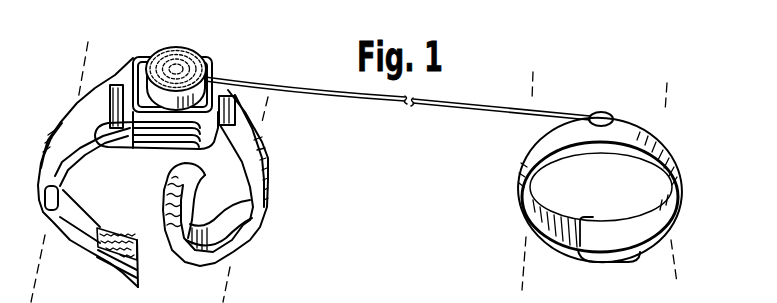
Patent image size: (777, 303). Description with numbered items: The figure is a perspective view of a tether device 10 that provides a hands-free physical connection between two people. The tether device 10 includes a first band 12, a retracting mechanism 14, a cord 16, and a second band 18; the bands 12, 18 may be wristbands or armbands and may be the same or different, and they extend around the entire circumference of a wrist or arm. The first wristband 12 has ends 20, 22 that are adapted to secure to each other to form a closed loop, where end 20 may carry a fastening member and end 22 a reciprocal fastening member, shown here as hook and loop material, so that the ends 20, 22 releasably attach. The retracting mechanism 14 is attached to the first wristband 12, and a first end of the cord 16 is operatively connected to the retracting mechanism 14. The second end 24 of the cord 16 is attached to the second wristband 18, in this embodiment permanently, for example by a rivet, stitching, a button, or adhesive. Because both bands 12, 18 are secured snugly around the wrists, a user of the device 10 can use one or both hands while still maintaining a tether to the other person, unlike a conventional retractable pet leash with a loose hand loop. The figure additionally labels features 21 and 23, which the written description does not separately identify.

The tether device 10 is at (500, 56).
The first band 12 is at (185, 160).
The retracting mechanism 14 is at (204, 52).
The cord 16 is at (447, 103).
The second band 18 is at (624, 207).
The end of first wristband 20 is at (162, 172).
The tab 21 is at (610, 228).
The end of first wristband 22 is at (140, 218).
The lug 23 is at (615, 264).
The second end of cord 24 is at (600, 95).